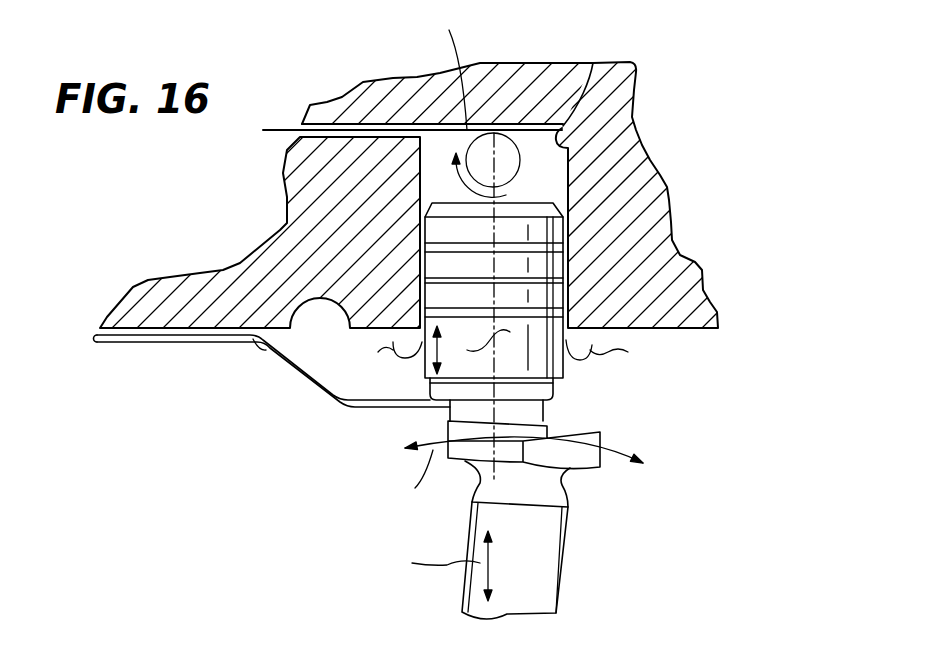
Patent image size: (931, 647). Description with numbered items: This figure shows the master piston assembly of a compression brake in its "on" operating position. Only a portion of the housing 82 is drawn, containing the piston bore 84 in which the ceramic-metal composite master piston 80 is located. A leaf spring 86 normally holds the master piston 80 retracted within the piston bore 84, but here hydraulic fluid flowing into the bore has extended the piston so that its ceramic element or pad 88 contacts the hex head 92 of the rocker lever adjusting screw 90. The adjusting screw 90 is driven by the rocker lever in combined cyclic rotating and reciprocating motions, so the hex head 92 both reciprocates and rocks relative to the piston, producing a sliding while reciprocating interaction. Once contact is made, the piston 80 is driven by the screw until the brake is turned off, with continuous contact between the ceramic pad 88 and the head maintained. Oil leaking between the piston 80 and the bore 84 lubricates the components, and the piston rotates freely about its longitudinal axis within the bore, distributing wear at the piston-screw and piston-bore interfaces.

The master piston 80 is at (600, 368).
The housing 82 is at (633, 168).
The piston bore 84 is at (593, 63).
The leaf spring 86 is at (313, 392).
The ceramic element or pad 88 is at (533, 413).
The rocker lever adjusting screw 90 is at (547, 565).
The hex head 92 is at (593, 443).